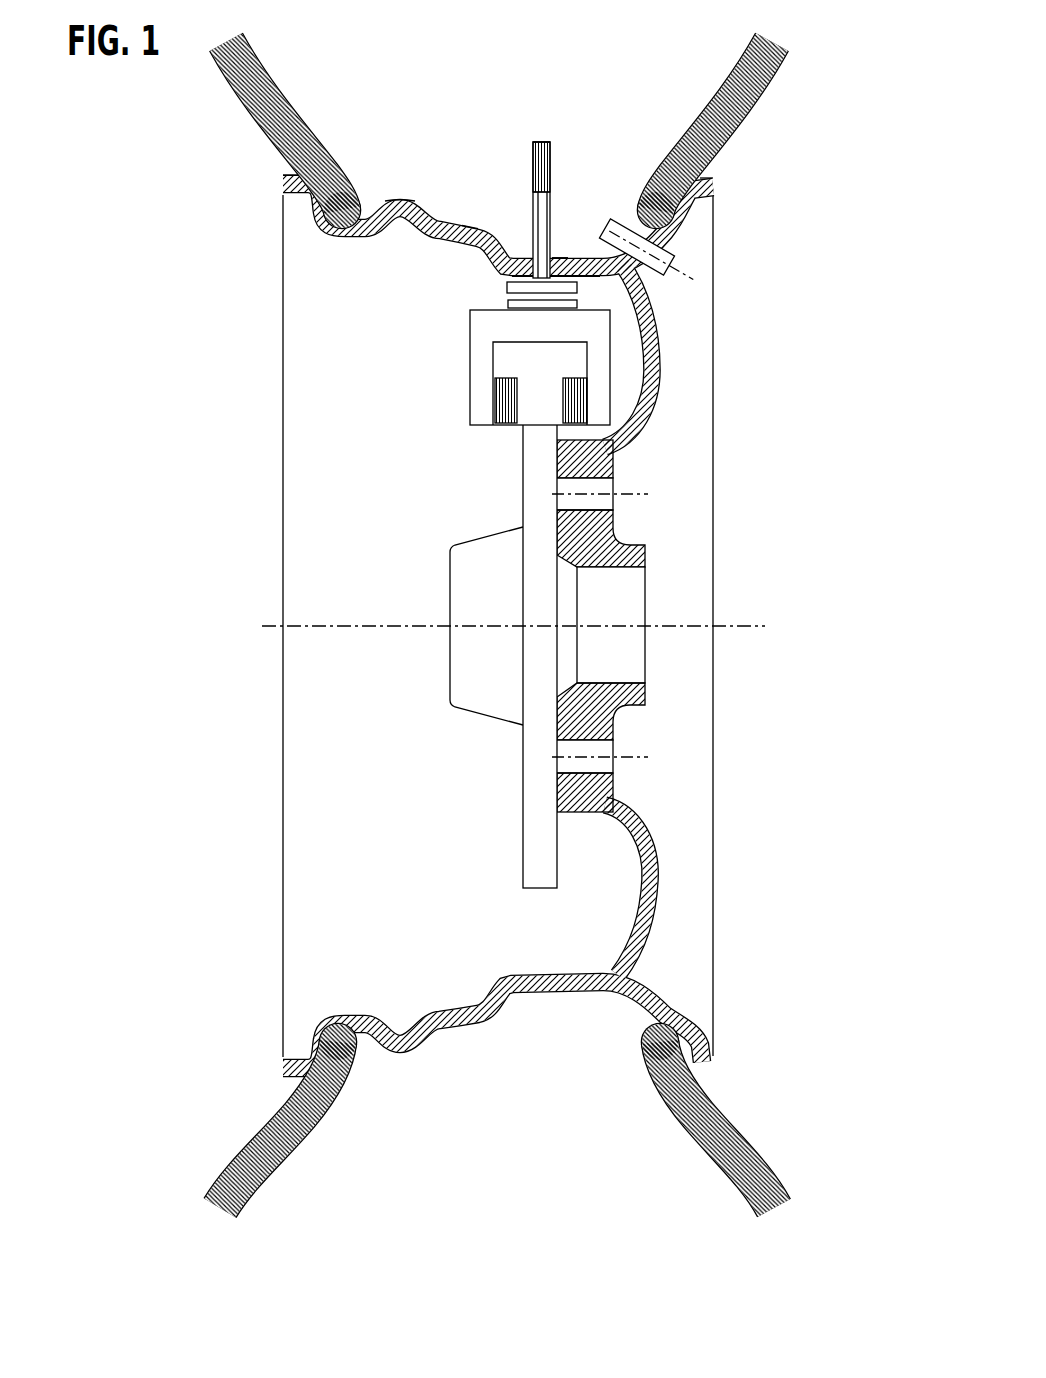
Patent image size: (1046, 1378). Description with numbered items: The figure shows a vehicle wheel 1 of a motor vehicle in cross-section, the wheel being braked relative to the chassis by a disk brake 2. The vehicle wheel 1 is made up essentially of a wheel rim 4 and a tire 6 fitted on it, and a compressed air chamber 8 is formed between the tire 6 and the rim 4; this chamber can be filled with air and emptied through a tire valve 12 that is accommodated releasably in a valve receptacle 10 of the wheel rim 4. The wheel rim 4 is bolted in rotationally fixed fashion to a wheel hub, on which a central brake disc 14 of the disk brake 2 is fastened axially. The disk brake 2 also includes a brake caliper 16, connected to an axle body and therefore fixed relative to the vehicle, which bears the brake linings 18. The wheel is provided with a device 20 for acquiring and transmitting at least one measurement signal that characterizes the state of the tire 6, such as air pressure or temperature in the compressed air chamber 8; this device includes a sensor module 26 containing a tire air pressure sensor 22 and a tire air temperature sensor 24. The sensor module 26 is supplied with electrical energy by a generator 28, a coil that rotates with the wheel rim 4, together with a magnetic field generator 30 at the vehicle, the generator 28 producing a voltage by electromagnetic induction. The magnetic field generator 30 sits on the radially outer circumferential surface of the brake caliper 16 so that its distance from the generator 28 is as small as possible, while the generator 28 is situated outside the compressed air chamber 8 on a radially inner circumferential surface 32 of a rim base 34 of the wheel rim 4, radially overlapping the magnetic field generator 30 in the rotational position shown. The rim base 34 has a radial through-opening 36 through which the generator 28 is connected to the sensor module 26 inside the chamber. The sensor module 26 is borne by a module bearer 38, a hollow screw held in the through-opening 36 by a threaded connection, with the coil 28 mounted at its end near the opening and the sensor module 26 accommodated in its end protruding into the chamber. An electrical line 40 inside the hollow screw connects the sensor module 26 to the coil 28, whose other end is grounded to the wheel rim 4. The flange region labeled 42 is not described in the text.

The vehicle wheel 1 is at (812, 76).
The disk brake 2 is at (432, 528).
The wheel rim 4 is at (401, 199).
The tire 6 is at (716, 131).
The compressed air chamber 8 is at (574, 93).
The valve receptacle 10 is at (620, 204).
The tire valve 12 is at (666, 258).
The brake disc 14 is at (538, 851).
The brake caliper 16 is at (483, 365).
The brake linings 18 is at (505, 427).
The device for acquiring and transmitting at least one measurement signal 20 is at (517, 147).
The tire air pressure sensor 22 is at (542, 142).
The tire air temperature sensor 24 is at (551, 141).
The sensor module 26 is at (546, 165).
The generator 28 is at (510, 284).
The magnetic field generator 30 is at (510, 303).
The radially inner circumferential surface 32 is at (500, 262).
The rim base 34 is at (463, 223).
The radial through-opening 36 is at (558, 246).
The module bearer 38 is at (530, 229).
The electrical line 40 is at (537, 223).
The inner rim flange 42 is at (303, 203).